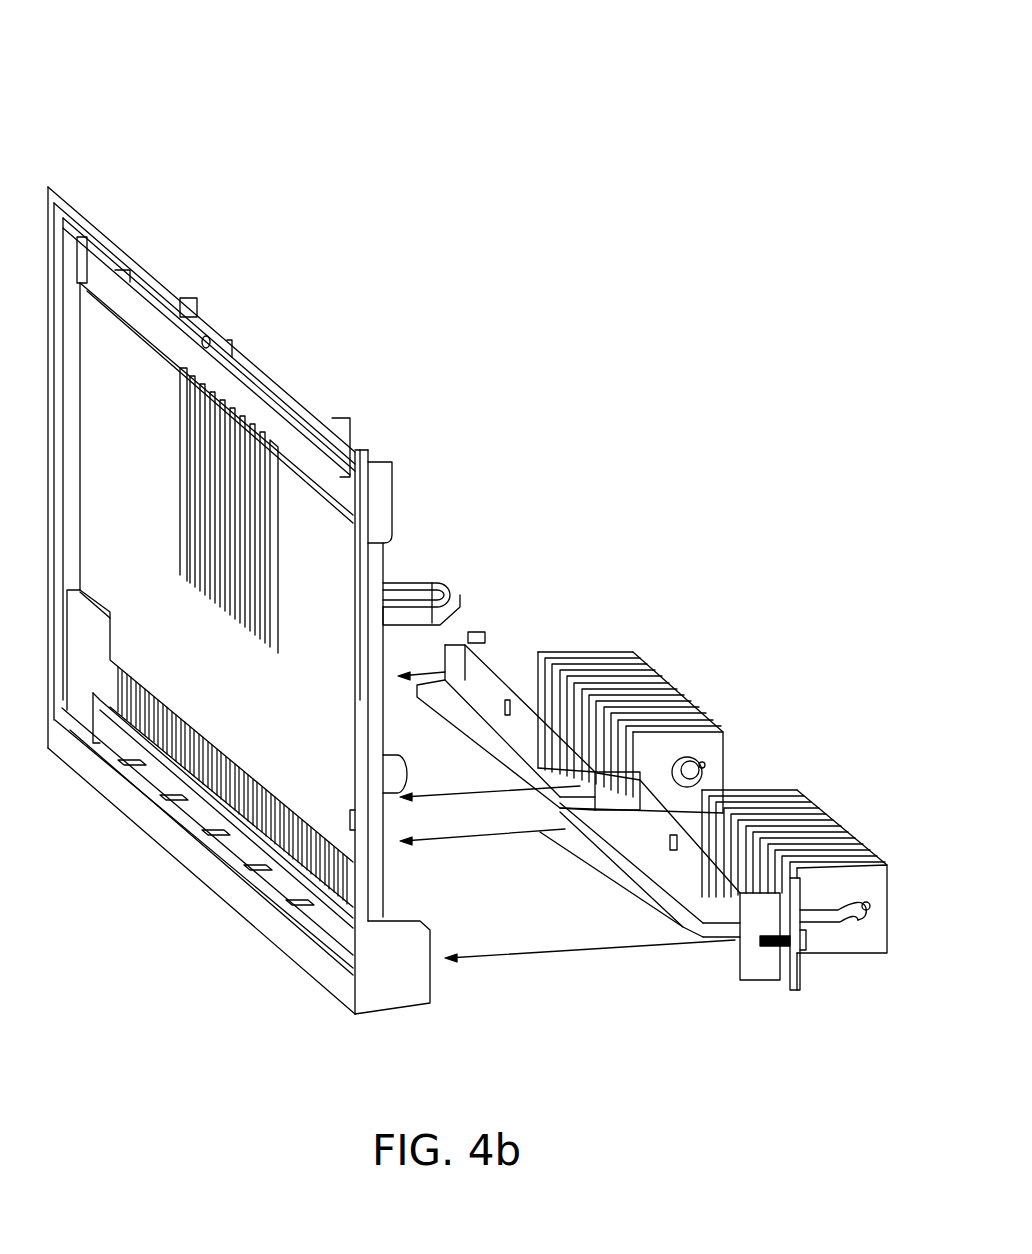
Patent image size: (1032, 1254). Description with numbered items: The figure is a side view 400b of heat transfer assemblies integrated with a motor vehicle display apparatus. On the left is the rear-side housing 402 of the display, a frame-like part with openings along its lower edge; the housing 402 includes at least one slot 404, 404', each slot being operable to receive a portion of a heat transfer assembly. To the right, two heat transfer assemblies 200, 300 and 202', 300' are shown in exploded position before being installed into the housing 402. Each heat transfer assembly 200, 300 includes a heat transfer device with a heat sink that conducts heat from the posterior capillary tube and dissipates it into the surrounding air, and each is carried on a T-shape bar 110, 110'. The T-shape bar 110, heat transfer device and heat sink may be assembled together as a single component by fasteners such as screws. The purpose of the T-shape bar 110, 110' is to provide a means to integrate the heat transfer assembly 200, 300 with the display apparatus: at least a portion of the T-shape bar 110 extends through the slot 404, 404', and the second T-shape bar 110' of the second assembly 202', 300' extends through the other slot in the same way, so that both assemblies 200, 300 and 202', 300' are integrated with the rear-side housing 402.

The side view 400b is at (124, 110).
The rear-side housing 402 is at (143, 258).
The slot 404 is at (185, 830).
The slot 404' is at (207, 841).
The T-shape bar 110 is at (570, 709).
The T-shape bar 110' is at (660, 909).
The heat transfer assembly 200 is at (653, 716).
The heat transfer assembly 300 is at (653, 716).
The heat transfer assembly 202' is at (818, 872).
The heat transfer assembly 300' is at (818, 872).